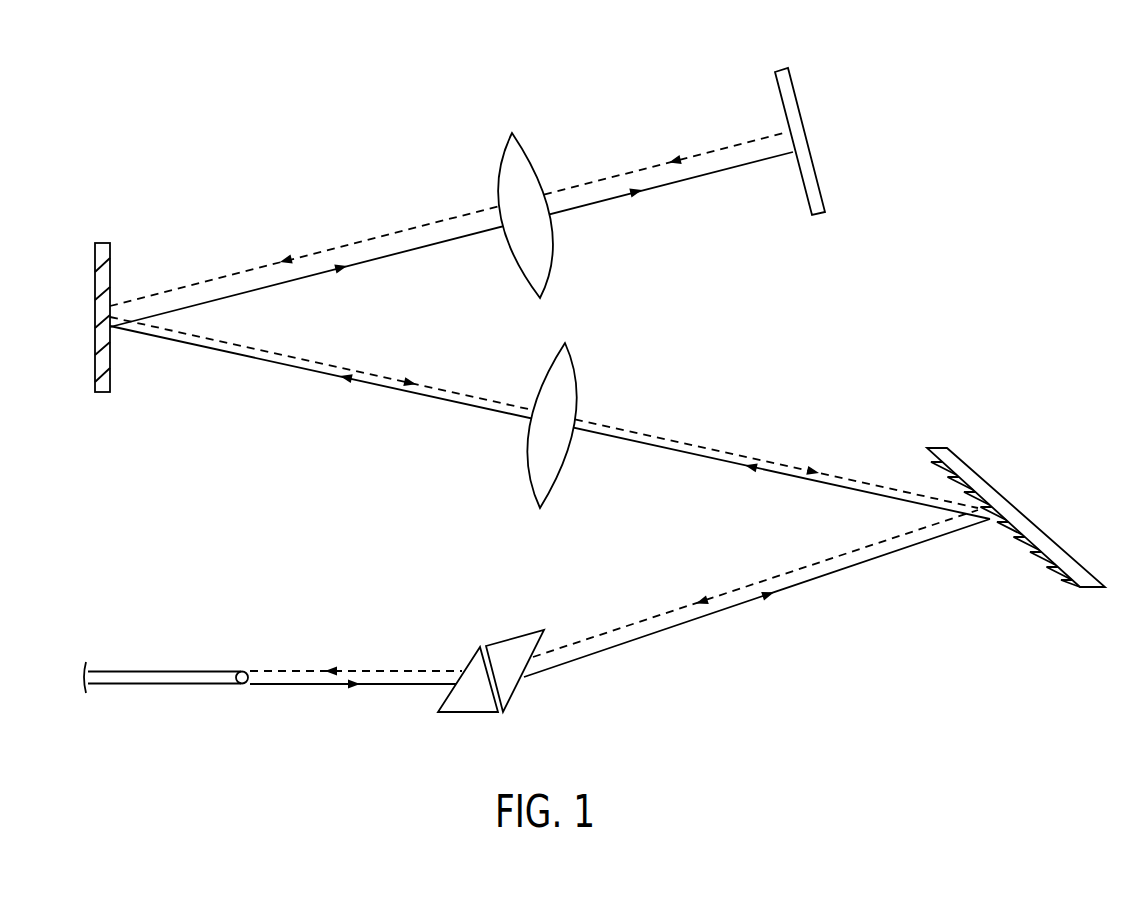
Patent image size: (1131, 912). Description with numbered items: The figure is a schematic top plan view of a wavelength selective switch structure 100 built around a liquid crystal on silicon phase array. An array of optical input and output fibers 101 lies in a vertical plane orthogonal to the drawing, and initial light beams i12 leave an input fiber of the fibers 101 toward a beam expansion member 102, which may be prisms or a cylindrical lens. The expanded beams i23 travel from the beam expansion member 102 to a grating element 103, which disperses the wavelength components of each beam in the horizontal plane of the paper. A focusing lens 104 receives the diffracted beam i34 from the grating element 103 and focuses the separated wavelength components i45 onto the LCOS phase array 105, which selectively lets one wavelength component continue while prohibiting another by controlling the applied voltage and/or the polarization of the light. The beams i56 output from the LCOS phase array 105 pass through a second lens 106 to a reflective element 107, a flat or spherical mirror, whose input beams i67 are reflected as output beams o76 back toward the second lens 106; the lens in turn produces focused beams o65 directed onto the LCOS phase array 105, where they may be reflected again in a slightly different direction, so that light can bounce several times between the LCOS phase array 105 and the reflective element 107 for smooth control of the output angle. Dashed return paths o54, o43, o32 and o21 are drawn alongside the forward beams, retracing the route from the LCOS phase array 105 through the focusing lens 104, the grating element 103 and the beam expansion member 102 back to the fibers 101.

The wavelength selective switch structure 100 is at (871, 72).
The optical input and output fibers 101 is at (148, 670).
The beam expansion member 102 is at (522, 635).
The grating element 103 is at (1030, 518).
The focusing lens 104 is at (573, 392).
The LCOS phase array 105 is at (95, 355).
The second lens 106 is at (523, 145).
The reflective element 107 is at (822, 172).
The initial light beams i12 is at (348, 687).
The output beams returning to the fibers o21 is at (350, 668).
The expanded beams i23 is at (770, 597).
The output beams from the grating element o32 is at (716, 597).
The diffracted beam i34 is at (733, 465).
The output beams from the focusing lens o43 is at (745, 457).
The separated wavelength components i45 is at (333, 378).
The output beams from the LCOS phase array o54 is at (375, 372).
The beams output from the LCOS phase array i56 is at (323, 270).
The focused beams o65 is at (313, 252).
The input beams to the reflective element i67 is at (690, 178).
The output beams from the reflective element o76 is at (653, 160).